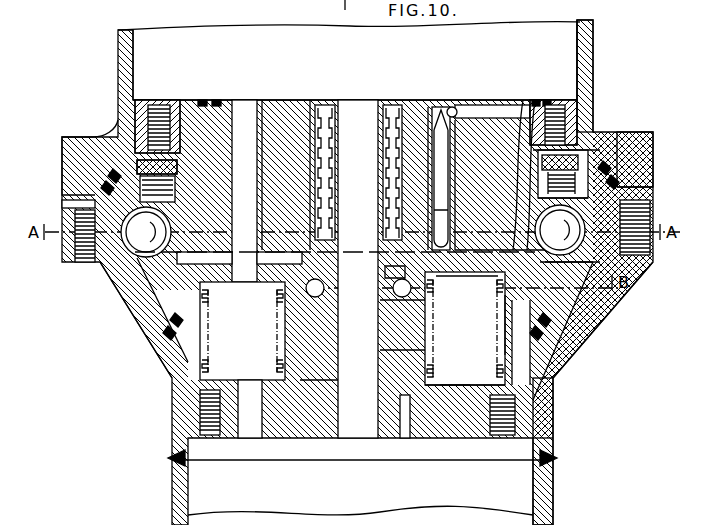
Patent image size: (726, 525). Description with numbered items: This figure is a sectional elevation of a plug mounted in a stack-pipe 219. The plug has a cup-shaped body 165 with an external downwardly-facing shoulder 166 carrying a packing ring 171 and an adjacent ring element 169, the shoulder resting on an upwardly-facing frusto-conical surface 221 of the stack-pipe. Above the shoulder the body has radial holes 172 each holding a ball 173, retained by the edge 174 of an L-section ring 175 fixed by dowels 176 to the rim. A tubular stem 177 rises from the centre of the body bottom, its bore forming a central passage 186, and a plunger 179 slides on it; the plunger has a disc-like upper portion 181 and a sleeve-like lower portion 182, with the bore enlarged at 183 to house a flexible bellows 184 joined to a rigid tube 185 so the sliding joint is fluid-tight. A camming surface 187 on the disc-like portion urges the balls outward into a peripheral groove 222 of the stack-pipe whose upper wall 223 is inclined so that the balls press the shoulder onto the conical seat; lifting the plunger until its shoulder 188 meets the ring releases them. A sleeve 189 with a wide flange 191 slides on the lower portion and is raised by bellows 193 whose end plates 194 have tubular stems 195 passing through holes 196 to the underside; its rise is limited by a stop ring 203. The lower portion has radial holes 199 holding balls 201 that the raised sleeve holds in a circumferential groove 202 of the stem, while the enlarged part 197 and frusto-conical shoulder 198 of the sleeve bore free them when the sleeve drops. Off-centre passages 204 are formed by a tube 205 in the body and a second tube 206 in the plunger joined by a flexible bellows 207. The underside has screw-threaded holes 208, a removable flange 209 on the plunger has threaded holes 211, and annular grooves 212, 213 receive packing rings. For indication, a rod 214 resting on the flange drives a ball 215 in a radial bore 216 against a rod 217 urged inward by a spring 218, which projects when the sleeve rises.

The cup-shaped body 165 is at (560, 268).
The downwardly-facing shoulder 166 is at (537, 293).
The housing wall 169 is at (553, 316).
The packing ring 171 is at (546, 324).
The radial hole 172 is at (135, 277).
The ball 173 is at (108, 258).
The edge of L-section ring 174 is at (97, 200).
The L-section ring 175 is at (140, 160).
The dowel 176 is at (116, 134).
The tubular stem 177 is at (335, 442).
The plunger 179 is at (435, 112).
The disc-like upper portion 181 is at (278, 133).
The sleeve-like lower portion 182 is at (398, 353).
The enlarged bore part 183 is at (312, 157).
The flexible bellows 184 is at (320, 118).
The rigid tube 185 is at (317, 200).
The central passage 186 is at (356, 405).
The camming surface 187 is at (566, 251).
The shoulder 188 is at (167, 197).
The sleeve 189 is at (421, 442).
The wide flange 191 is at (395, 262).
The bellows 193 is at (410, 333).
The end plate 194 is at (487, 382).
The tubular stem 195 is at (453, 435).
The hole 196 is at (470, 412).
The enlarged part 197 is at (441, 280).
The frusto-conical shoulder 198 is at (440, 283).
The radial hole 199 is at (400, 272).
The ball 201 is at (322, 290).
The circumferential groove 202 is at (396, 294).
The stop ring 203 is at (593, 282).
The passage 204 is at (248, 412).
The tube 205 is at (218, 439).
The second tube 206 is at (238, 125).
The flexible bellows 207 is at (213, 372).
The screw-threaded hole 208 is at (550, 442).
The removable flange 209 is at (572, 103).
The screw-threaded hole 211 is at (580, 128).
The annular groove 212 is at (205, 100).
The annular groove 213 is at (190, 100).
The rod 214 is at (438, 170).
The ball 215 is at (445, 110).
The radial bore 216 is at (508, 100).
The rod 217 is at (480, 113).
The spring 218 is at (563, 100).
The stack-pipe 219 is at (543, 422).
The frusto-conical surface 221 is at (536, 345).
The peripheral groove 222 is at (622, 202).
The upper wall 223 is at (615, 192).